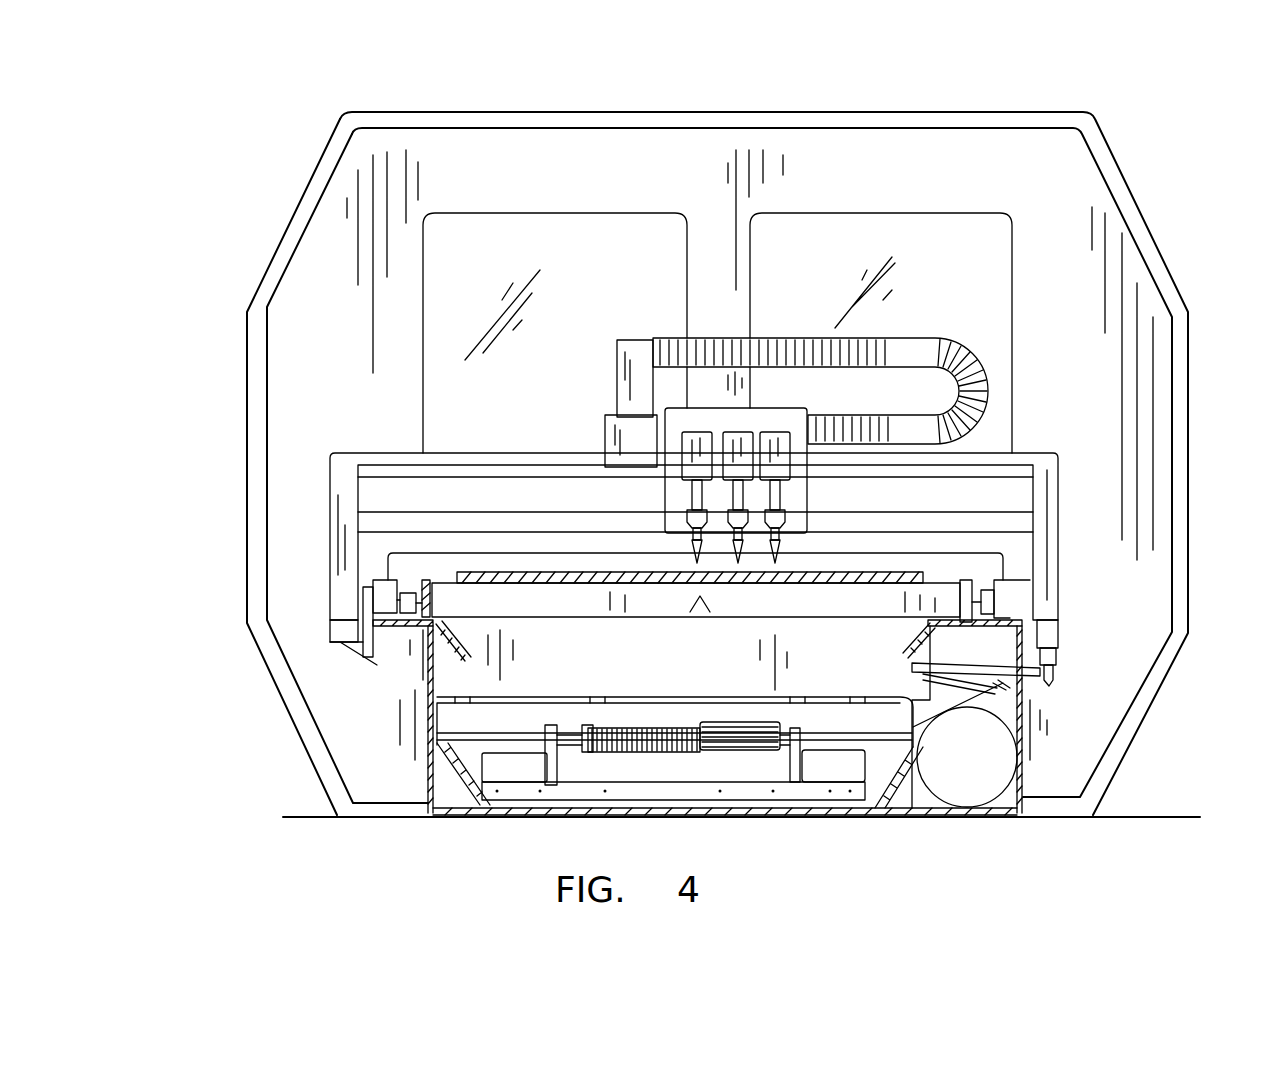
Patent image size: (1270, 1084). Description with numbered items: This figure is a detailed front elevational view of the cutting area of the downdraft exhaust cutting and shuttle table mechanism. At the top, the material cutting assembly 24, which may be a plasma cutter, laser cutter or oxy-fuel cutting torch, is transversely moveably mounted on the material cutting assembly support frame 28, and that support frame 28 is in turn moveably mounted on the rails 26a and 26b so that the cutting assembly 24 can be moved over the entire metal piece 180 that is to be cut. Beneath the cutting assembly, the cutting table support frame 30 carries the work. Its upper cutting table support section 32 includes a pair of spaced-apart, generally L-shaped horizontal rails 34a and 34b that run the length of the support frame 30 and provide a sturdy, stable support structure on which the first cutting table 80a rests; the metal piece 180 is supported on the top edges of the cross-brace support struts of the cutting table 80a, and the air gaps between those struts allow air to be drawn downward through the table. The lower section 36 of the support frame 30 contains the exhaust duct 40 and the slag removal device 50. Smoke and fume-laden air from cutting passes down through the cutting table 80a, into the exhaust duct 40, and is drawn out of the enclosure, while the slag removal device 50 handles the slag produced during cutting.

The material cutting assembly 24 is at (717, 338).
The metal piece 180 is at (887, 573).
The material cutting assembly support frame 28 is at (1045, 533).
The horizontal rail 34b is at (997, 607).
The rail 26a is at (335, 624).
The rail 26b is at (1053, 656).
The horizontal rail 34a is at (424, 672).
The upper cutting table support section 32 is at (420, 682).
The cutting table support frame 30 is at (428, 626).
The slag removal device 50 is at (553, 786).
The first cutting table 80a is at (828, 607).
The lower section 36 is at (898, 808).
The exhaust duct 40 is at (978, 768).